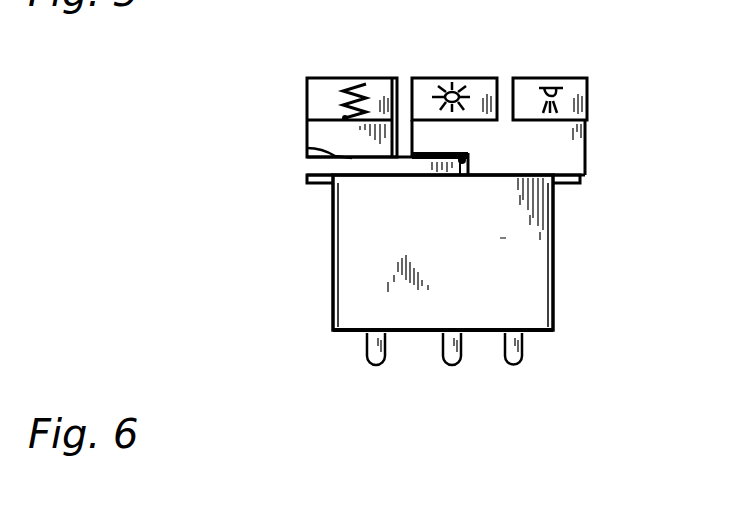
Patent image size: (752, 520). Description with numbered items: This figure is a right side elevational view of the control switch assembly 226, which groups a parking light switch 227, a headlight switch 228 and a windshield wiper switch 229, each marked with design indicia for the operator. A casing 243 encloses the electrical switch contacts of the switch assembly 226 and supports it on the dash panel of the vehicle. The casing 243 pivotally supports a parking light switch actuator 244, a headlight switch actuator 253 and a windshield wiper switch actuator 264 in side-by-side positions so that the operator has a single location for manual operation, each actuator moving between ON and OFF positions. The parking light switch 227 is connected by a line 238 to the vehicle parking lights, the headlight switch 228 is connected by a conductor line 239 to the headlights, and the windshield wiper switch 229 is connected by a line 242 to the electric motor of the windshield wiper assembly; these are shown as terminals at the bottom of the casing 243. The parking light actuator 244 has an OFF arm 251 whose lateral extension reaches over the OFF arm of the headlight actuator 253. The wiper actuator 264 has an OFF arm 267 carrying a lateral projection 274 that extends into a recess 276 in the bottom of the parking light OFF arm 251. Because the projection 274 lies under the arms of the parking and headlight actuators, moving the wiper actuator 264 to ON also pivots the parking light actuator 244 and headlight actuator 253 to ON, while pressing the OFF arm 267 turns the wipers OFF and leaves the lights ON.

The switch assembly 226 is at (250, 222).
The parking light switch 227 is at (550, 46).
The headlight switch 228 is at (453, 46).
The windshield wiper switch 229 is at (352, 44).
The line 238 is at (513, 365).
The conductor line 239 is at (452, 365).
The line 242 is at (376, 365).
The casing 243 is at (553, 248).
The parking light switch actuator 244 is at (587, 92).
The OFF arm 251 is at (585, 152).
The headlight switch actuator 253 is at (481, 80).
The windshield wiper switch actuator 264 is at (307, 93).
The OFF arm 267 is at (307, 148).
The lateral projection 274 is at (427, 176).
The recess 276 is at (457, 176).